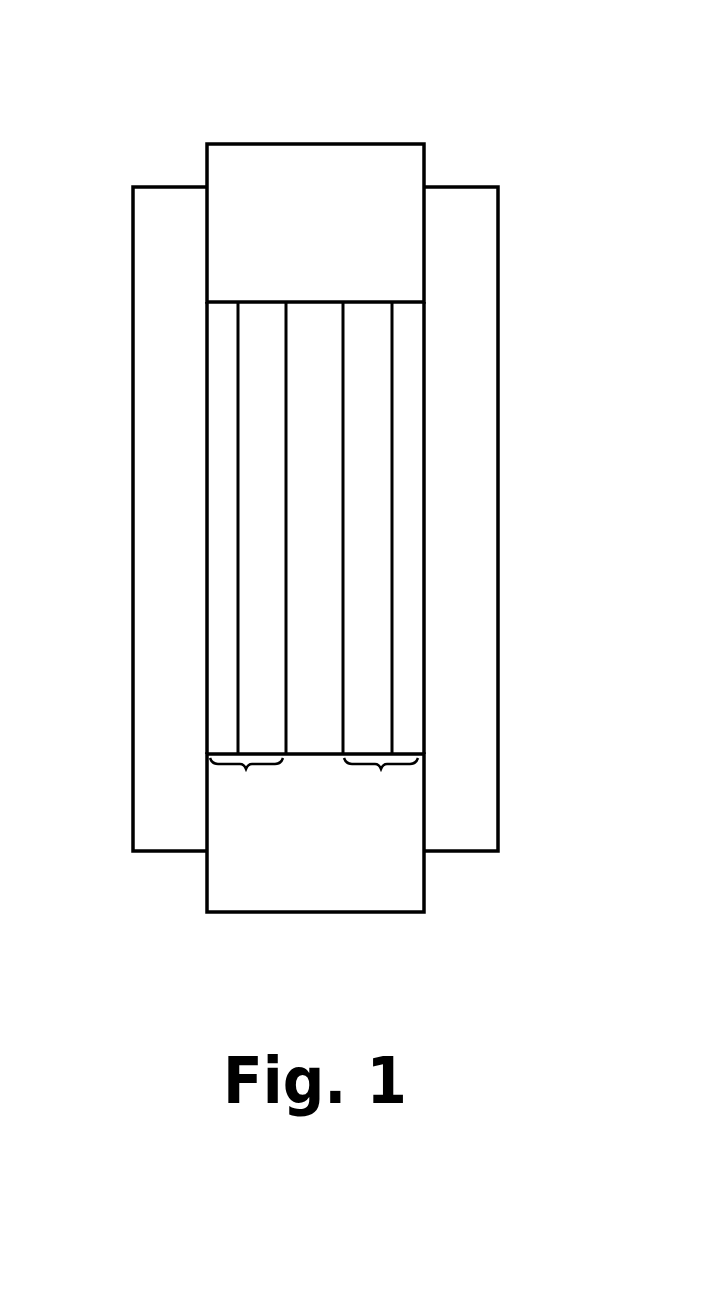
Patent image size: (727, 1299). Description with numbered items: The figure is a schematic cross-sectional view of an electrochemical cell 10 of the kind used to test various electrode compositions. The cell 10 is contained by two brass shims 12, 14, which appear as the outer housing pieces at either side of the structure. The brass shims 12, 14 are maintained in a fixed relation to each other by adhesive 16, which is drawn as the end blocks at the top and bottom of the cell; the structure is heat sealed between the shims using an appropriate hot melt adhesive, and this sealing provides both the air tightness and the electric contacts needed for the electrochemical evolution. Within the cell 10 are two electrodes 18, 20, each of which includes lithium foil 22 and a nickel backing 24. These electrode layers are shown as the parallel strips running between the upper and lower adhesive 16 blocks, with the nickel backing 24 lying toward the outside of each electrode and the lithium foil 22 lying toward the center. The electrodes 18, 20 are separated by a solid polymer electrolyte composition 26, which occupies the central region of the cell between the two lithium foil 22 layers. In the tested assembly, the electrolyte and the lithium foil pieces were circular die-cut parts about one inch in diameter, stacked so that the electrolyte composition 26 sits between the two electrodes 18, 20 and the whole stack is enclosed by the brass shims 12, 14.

The electrochemical cell 10 is at (346, 82).
The brass shim 12 is at (163, 261).
The brass shim 14 is at (453, 263).
The adhesive 16 is at (385, 176).
The electrode 18 is at (246, 785).
The electrode 20 is at (381, 785).
The lithium foil 22 is at (257, 637).
The nickel backing 24 is at (227, 376).
The solid polymer electrolyte composition 26 is at (307, 398).